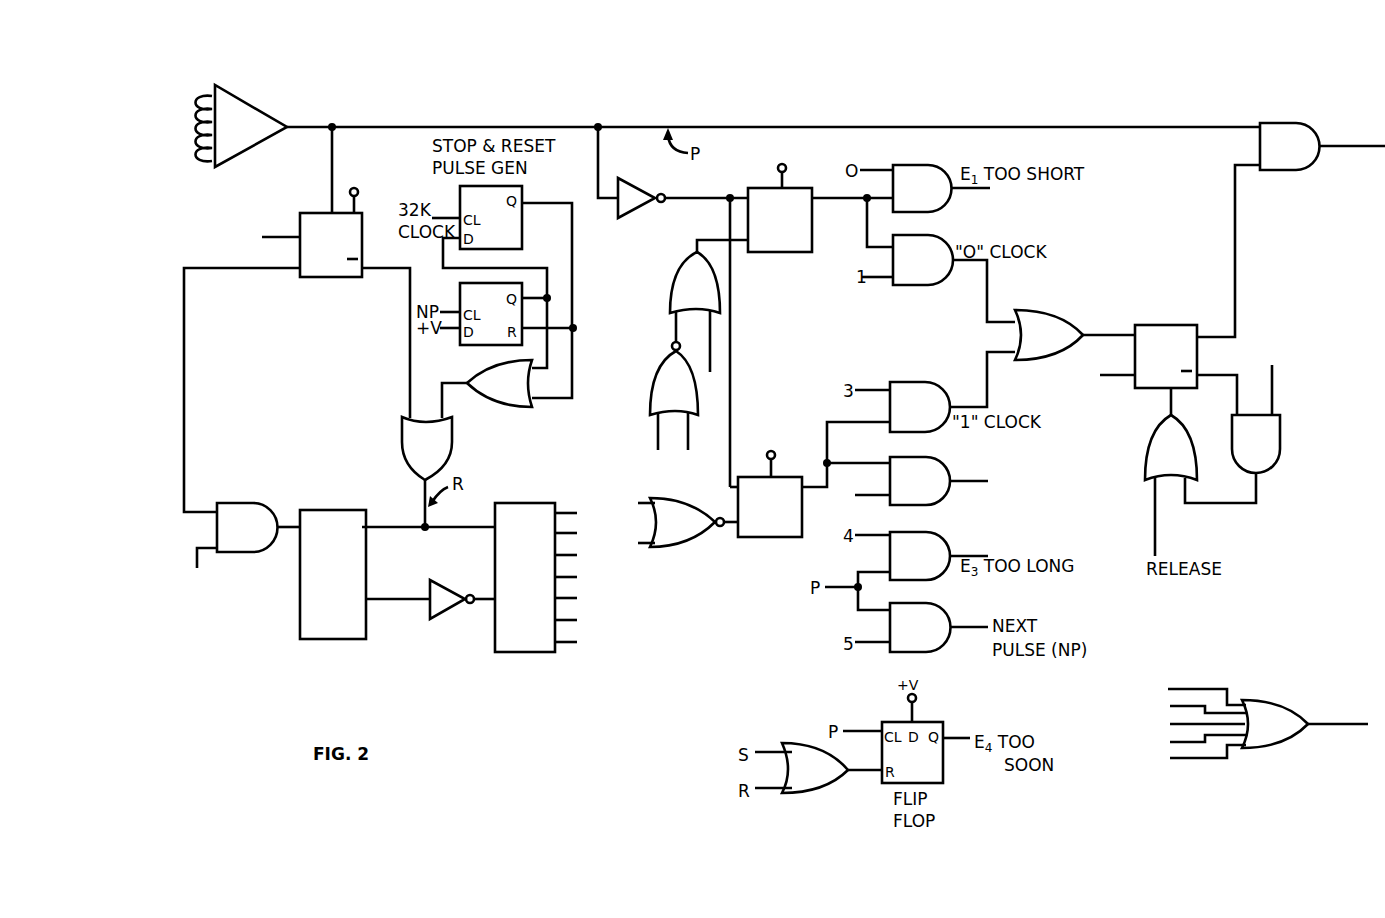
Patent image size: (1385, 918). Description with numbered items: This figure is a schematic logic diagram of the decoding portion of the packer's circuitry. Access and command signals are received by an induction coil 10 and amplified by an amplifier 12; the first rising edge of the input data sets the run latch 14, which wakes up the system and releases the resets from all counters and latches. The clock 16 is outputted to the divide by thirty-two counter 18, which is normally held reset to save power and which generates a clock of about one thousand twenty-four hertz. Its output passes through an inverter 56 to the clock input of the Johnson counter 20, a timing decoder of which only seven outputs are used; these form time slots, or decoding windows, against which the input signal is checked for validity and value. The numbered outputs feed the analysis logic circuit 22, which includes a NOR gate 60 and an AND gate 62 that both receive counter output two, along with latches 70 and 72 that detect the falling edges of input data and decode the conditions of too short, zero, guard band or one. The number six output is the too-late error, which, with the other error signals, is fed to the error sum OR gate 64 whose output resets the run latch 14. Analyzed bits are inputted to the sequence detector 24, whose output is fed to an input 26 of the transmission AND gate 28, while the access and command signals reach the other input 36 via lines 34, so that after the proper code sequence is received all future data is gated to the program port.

The induction coil 10 is at (190, 96).
The amplifier 12 is at (248, 102).
The run latch 14 is at (306, 212).
The clock 16 is at (240, 506).
The divide by thirty-two counter 18 is at (325, 627).
The Johnson counter 20 is at (497, 636).
The analysis logic circuit 22 is at (781, 362).
The sequence detector 24 is at (1194, 358).
The input of transmission AND gate 26 is at (1252, 165).
The transmission AND gate 28 is at (1272, 130).
The lines 34 is at (892, 128).
The other input of transmission AND gate 36 is at (1257, 125).
The inverter 56 is at (458, 582).
The NOR gate 60 is at (673, 544).
The AND gate 62 is at (930, 470).
The error sum OR gate 64 is at (1278, 704).
The latch 70 is at (791, 242).
The latch 72 is at (770, 533).